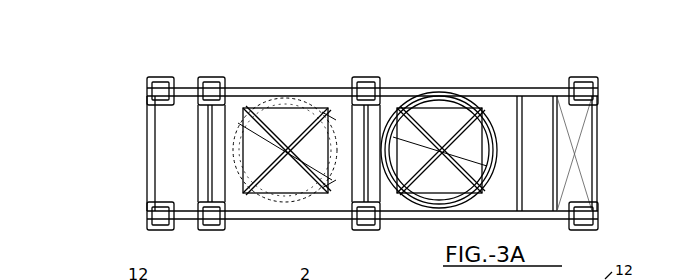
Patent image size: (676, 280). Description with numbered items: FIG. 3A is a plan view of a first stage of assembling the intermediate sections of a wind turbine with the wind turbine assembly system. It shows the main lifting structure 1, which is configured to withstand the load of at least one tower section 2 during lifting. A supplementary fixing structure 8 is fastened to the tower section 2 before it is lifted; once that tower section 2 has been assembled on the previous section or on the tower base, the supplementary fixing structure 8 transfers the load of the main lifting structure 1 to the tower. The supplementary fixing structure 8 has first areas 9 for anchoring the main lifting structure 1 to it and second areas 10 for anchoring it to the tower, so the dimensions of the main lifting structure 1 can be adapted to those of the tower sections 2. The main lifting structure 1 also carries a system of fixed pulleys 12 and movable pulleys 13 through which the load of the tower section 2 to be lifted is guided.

The main lifting structure 1 is at (501, 88).
The tower section 2 is at (440, 100).
The supplementary fixing structure 8 is at (291, 92).
The first areas 9 is at (330, 118).
The second areas 10 is at (263, 196).
The fixed pulleys 12 is at (160, 90).
The movable pulleys 13 is at (210, 215).